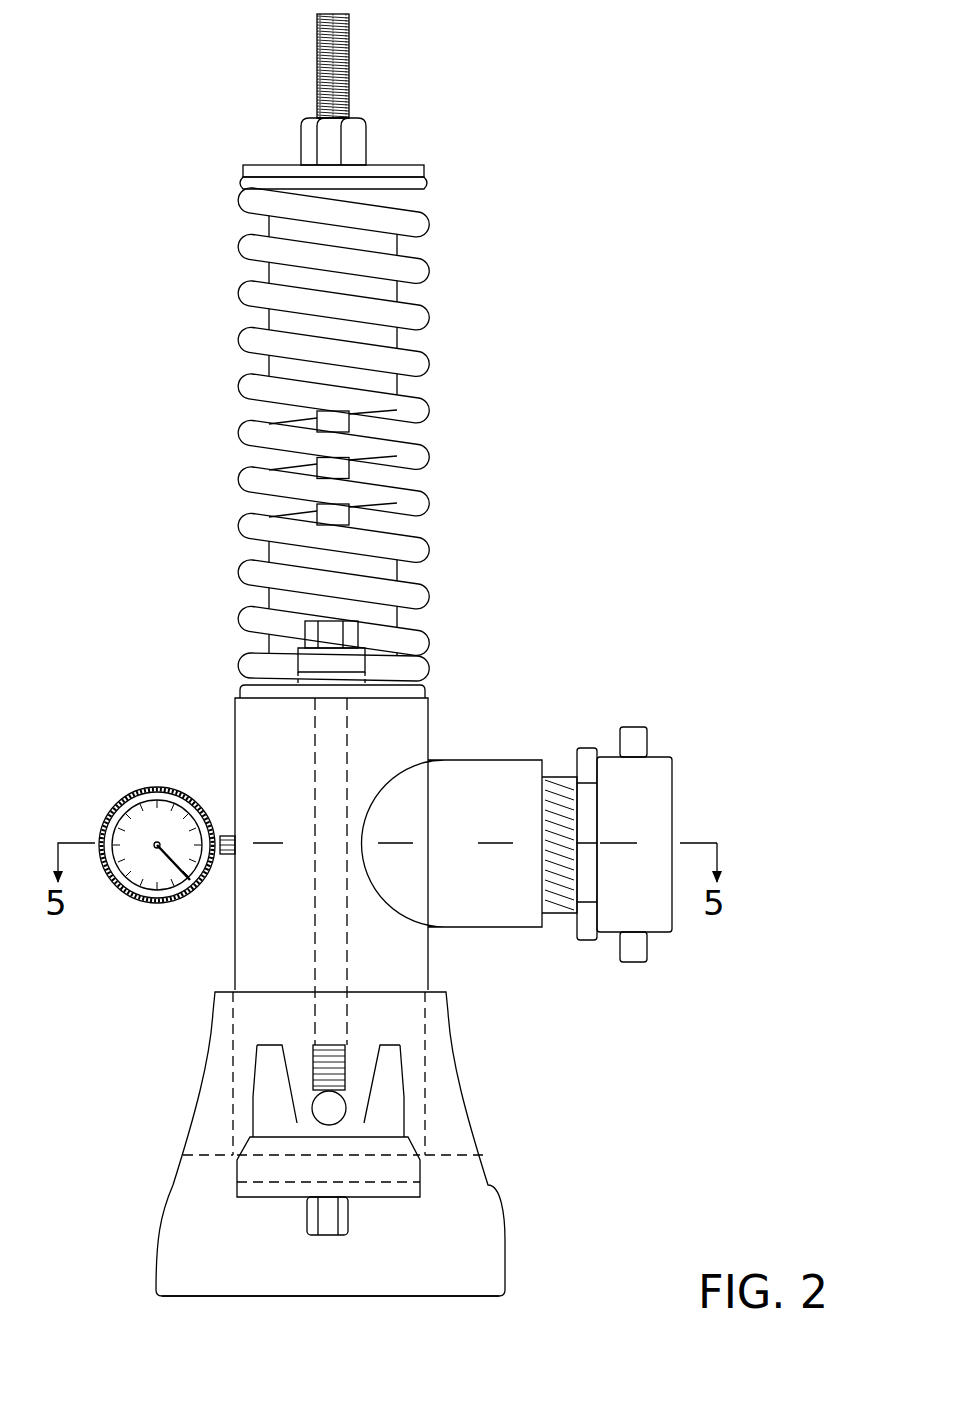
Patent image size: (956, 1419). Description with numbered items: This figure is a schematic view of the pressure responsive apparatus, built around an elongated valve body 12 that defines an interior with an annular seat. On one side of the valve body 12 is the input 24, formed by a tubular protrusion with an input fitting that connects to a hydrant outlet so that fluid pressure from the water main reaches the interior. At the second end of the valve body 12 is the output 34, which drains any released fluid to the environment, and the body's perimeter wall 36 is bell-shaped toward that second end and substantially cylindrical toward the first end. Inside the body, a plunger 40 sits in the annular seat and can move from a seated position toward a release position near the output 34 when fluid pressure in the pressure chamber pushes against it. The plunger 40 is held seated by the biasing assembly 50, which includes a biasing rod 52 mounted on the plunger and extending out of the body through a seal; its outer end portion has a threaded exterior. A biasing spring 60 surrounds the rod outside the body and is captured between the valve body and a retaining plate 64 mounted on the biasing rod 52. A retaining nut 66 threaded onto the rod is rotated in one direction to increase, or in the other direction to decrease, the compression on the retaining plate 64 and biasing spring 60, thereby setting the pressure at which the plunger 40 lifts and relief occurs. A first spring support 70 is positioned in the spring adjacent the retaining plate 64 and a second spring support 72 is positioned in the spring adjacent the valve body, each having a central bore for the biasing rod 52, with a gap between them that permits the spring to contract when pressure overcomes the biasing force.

The biasing rod 52 is at (350, 90).
The retaining nut 66 is at (367, 143).
The retaining plate 64 is at (277, 165).
The first spring support 70 is at (400, 300).
The biasing assembly 50 is at (419, 434).
The biasing spring 60 is at (382, 434).
The second spring support 72 is at (397, 576).
The input 24 is at (668, 730).
The valve body 12 is at (235, 947).
The perimeter wall 36 is at (457, 1055).
The plunger 40 is at (417, 1170).
The output 34 is at (517, 1287).